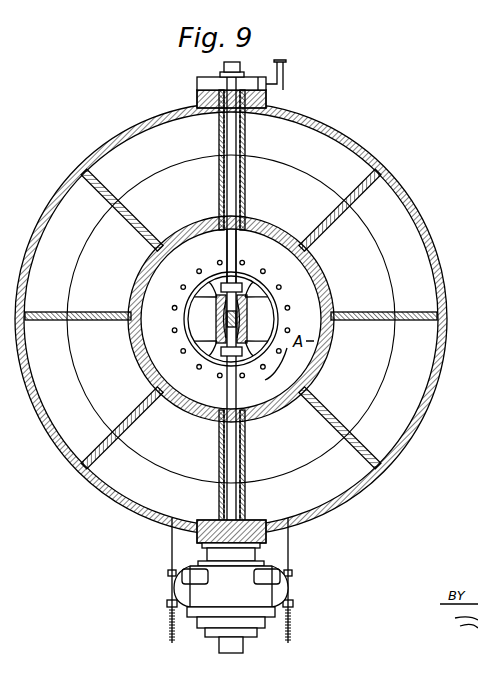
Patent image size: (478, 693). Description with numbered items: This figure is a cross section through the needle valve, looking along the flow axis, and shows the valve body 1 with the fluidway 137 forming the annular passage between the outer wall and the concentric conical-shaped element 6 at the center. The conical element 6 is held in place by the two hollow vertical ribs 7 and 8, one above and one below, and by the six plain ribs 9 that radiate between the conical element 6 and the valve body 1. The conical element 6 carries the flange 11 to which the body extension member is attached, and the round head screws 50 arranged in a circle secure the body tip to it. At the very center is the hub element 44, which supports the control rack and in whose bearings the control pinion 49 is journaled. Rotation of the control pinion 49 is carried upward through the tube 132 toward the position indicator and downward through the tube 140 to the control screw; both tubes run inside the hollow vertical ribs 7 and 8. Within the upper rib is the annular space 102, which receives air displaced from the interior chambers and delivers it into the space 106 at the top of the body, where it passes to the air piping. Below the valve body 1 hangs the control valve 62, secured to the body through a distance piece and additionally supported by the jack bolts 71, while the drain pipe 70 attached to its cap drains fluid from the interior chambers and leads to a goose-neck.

The valve body 1 is at (425, 222).
The fluidway 137 is at (63, 247).
The plain ribs 9 is at (137, 224).
The concentric conical-shaped element 6 is at (272, 230).
The space 106 is at (200, 91).
The hollow vertical rib 7 is at (246, 187).
The annular space 102 is at (227, 201).
The tube 132 is at (228, 252).
The round head screws 50 is at (248, 264).
The control pinion 49 is at (217, 336).
The hub element 44 is at (216, 316).
The tube 140 is at (227, 388).
The hollow vertical rib 8 is at (219, 438).
The jack bolts 71 is at (289, 562).
The control valve 62 is at (240, 584).
The drain pipe 70 is at (219, 645).
The flange 11 is at (258, 500).